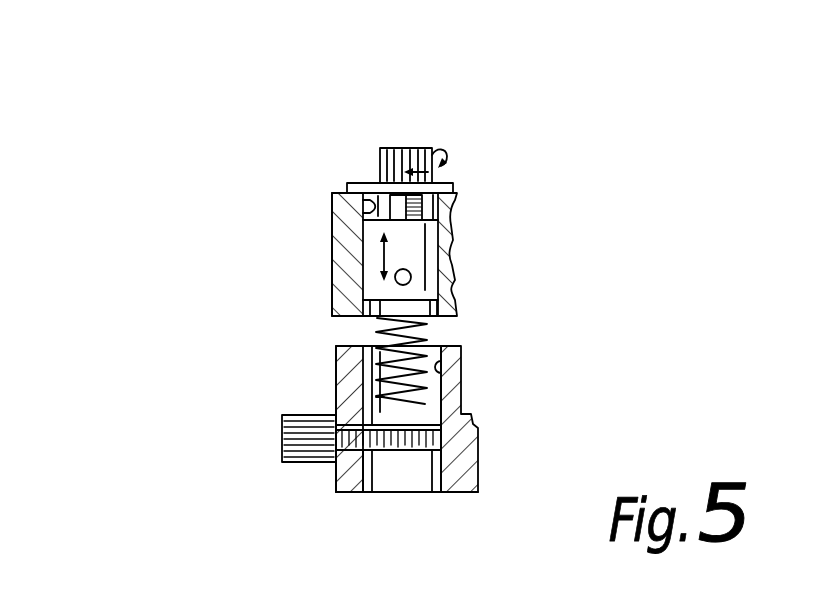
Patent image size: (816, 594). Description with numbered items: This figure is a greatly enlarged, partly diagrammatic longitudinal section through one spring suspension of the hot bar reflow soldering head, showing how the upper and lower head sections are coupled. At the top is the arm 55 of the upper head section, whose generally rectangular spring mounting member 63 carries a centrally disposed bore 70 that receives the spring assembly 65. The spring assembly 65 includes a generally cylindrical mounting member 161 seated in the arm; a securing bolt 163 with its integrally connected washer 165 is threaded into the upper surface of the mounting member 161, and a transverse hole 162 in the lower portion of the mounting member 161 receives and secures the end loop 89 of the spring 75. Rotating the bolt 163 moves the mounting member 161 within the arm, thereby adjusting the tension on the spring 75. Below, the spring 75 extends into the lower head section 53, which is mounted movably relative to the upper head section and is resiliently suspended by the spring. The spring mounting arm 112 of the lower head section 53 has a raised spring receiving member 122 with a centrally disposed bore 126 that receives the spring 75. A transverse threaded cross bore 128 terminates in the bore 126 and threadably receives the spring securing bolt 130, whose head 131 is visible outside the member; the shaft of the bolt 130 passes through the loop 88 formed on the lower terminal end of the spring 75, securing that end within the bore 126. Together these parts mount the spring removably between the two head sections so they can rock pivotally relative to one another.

The arm 55 is at (510, 84).
The spring assembly 65 is at (122, 217).
The spring mounting member 63 is at (343, 190).
The securing bolt 163 is at (380, 152).
The washer 165 is at (448, 174).
The bore 70 is at (365, 207).
The mounting member 161 is at (457, 228).
The transverse hole 162 is at (410, 271).
The end loop 89 is at (380, 312).
The spring 75 is at (420, 337).
The spring receiving member 122 is at (337, 346).
The lower head section 53 is at (294, 374).
The bore 126 is at (462, 373).
The spring securing bolt 130 is at (436, 416).
The head 131 is at (282, 434).
The threaded cross bore 128 is at (345, 466).
The spring mounting arm 112 is at (318, 497).
The loop 88 is at (382, 451).